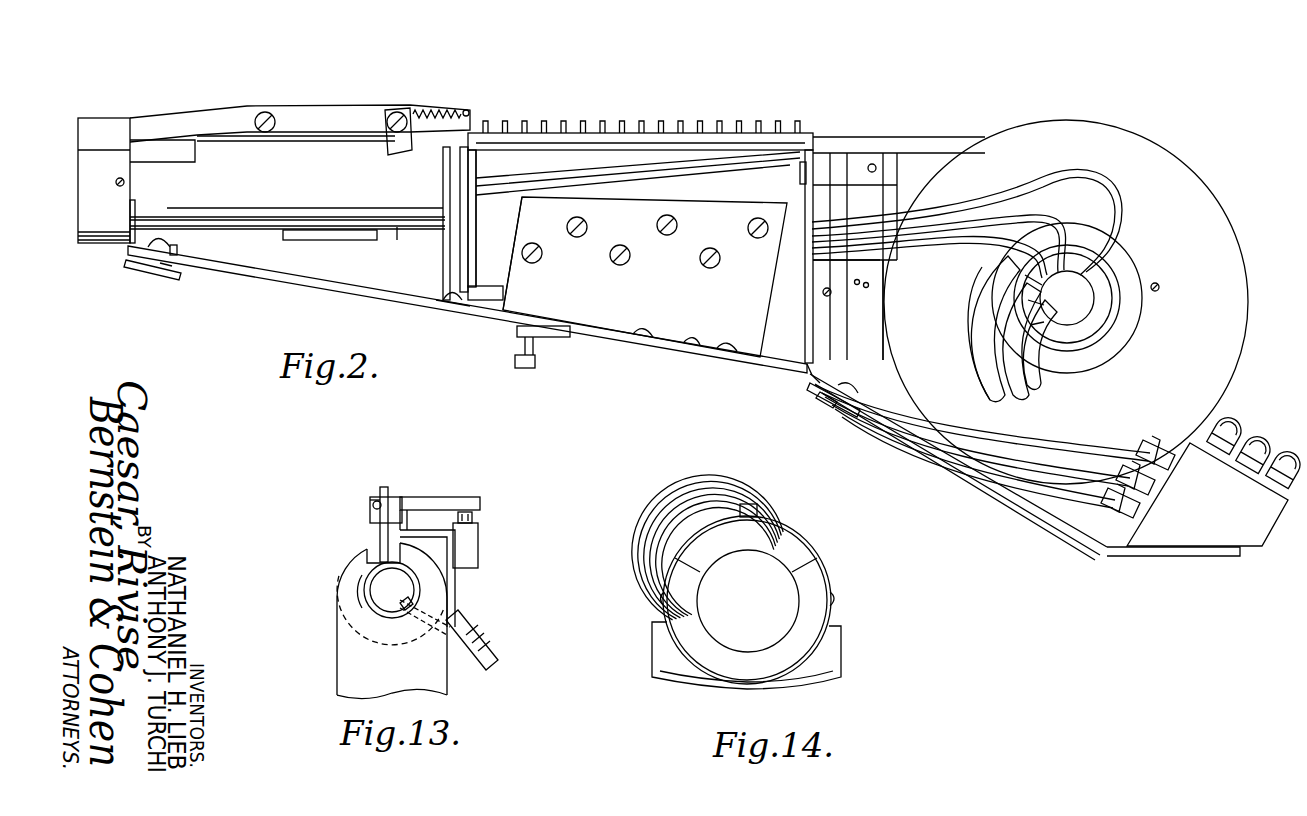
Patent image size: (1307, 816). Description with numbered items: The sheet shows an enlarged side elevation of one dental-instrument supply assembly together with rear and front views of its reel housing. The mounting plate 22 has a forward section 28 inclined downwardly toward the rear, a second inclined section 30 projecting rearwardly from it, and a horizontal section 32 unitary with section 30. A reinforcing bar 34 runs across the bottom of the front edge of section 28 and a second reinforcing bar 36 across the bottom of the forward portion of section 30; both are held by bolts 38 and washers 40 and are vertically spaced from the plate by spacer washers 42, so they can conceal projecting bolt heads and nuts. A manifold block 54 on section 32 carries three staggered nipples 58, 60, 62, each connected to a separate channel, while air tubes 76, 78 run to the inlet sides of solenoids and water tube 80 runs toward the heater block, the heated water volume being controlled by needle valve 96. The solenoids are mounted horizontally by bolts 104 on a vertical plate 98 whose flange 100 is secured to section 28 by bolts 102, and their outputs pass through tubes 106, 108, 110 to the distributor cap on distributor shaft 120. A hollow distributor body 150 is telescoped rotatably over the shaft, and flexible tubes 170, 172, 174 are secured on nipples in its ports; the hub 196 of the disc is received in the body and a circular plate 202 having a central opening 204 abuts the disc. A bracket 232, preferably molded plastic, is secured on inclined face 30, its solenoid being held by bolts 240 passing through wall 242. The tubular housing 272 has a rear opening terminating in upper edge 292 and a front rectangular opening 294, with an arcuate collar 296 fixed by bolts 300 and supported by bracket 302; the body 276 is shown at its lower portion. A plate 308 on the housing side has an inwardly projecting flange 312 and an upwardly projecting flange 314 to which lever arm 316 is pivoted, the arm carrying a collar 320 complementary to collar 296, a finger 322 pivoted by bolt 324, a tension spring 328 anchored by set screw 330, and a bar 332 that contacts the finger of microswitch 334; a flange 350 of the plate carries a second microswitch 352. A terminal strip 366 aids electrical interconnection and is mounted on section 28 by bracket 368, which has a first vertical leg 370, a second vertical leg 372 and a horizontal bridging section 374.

In FIG. 2, the plate 22 is at (444, 319).
In FIG. 2, the forward section 28 is at (308, 278).
In FIG. 2, the second inclined section 30 is at (1010, 496).
In FIG. 2, the section 32 is at (1155, 556).
In FIG. 2, the reinforcing bar 34 is at (165, 277).
In FIG. 2, the second reinforcing bar 36 is at (835, 405).
In FIG. 2, the bolts 38 is at (172, 245).
In FIG. 2, the washers 40 is at (180, 250).
In FIG. 2, the spacer washers 42 is at (168, 268).
In FIG. 2, the manifold block 54 is at (1197, 533).
In FIG. 2, the nipple 58 is at (1280, 466).
In FIG. 2, the nipple 60 is at (1250, 446).
In FIG. 2, the nipple 62 is at (1222, 430).
In FIG. 2, the air tube 76 is at (1092, 428).
In FIG. 2, the air tube 78 is at (1118, 450).
In FIG. 2, the water tube 80 is at (1095, 492).
In FIG. 2, the needle valve 96 is at (536, 366).
In FIG. 2, the vertical plate 98 is at (637, 276).
In FIG. 2, the flange 100 is at (688, 338).
In FIG. 2, the bolts 102 is at (641, 326).
In FIG. 2, the bolts 104 is at (587, 226).
In FIG. 2, the tube 106 is at (1022, 195).
In FIG. 2, the tube 108 is at (1035, 232).
In FIG. 2, the tube 110 is at (1008, 238).
In FIG. 2, the distributor shaft 120 is at (1104, 325).
In FIG. 2, the distributor body 150 is at (1122, 291).
In FIG. 2, the flexible tube 170 is at (668, 172).
In FIG. 2, the flexible tube 172 is at (992, 380).
In FIG. 2, the flexible tube 174 is at (968, 296).
In FIG. 2, the hub 196 is at (1115, 305).
In FIG. 2, the circular plate 202 is at (1117, 171).
In FIG. 2, the central opening 204 is at (1105, 265).
In FIG. 2, the bracket 232 is at (894, 364).
In FIG. 2, the bolts 240 is at (828, 288).
In FIG. 2, the wall 242 is at (840, 311).
In FIG. 2, the housing 272 is at (402, 242).
In FIG. 13, the bracket body 276 is at (368, 674).
In FIG. 13, the upper edge 292 is at (368, 545).
In FIG. 2, the rectangular opening 294 is at (195, 158).
In FIG. 2, the arcuate collar 296 is at (108, 243).
In FIG. 14, the arcuate collar 296 is at (815, 590).
In FIG. 14, the bolts 300 is at (660, 596).
In FIG. 14, the bracket 302 is at (843, 676).
In FIG. 13, the plate 308 is at (456, 600).
In FIG. 13, the flange 312 is at (425, 540).
In FIG. 13, the upwardly projecting flange 314 is at (408, 518).
In FIG. 2, the lever arm 316 is at (316, 110).
In FIG. 14, the lever arm 316 is at (758, 508).
In FIG. 2, the collar 320 is at (106, 118).
In FIG. 14, the collar 320 is at (805, 528).
In FIG. 2, the finger 322 is at (395, 110).
In FIG. 13, the finger 322 is at (388, 490).
In FIG. 13, the bolt 324 is at (375, 500).
In FIG. 2, the tension spring 328 is at (440, 110).
In FIG. 13, the set screw 330 is at (370, 500).
In FIG. 13, the bar 332 is at (450, 497).
In FIG. 13, the microswitch 334 is at (480, 530).
In FIG. 2, the flange 350 is at (350, 241).
In FIG. 13, the flange 350 is at (493, 666).
In FIG. 13, the second microswitch 352 is at (490, 648).
In FIG. 2, the terminal strip 366 is at (645, 125).
In FIG. 2, the bracket 368 is at (481, 246).
In FIG. 2, the first vertical leg 370 is at (482, 241).
In FIG. 2, the second vertical leg 372 is at (803, 180).
In FIG. 2, the horizontal bridging section 374 is at (556, 145).